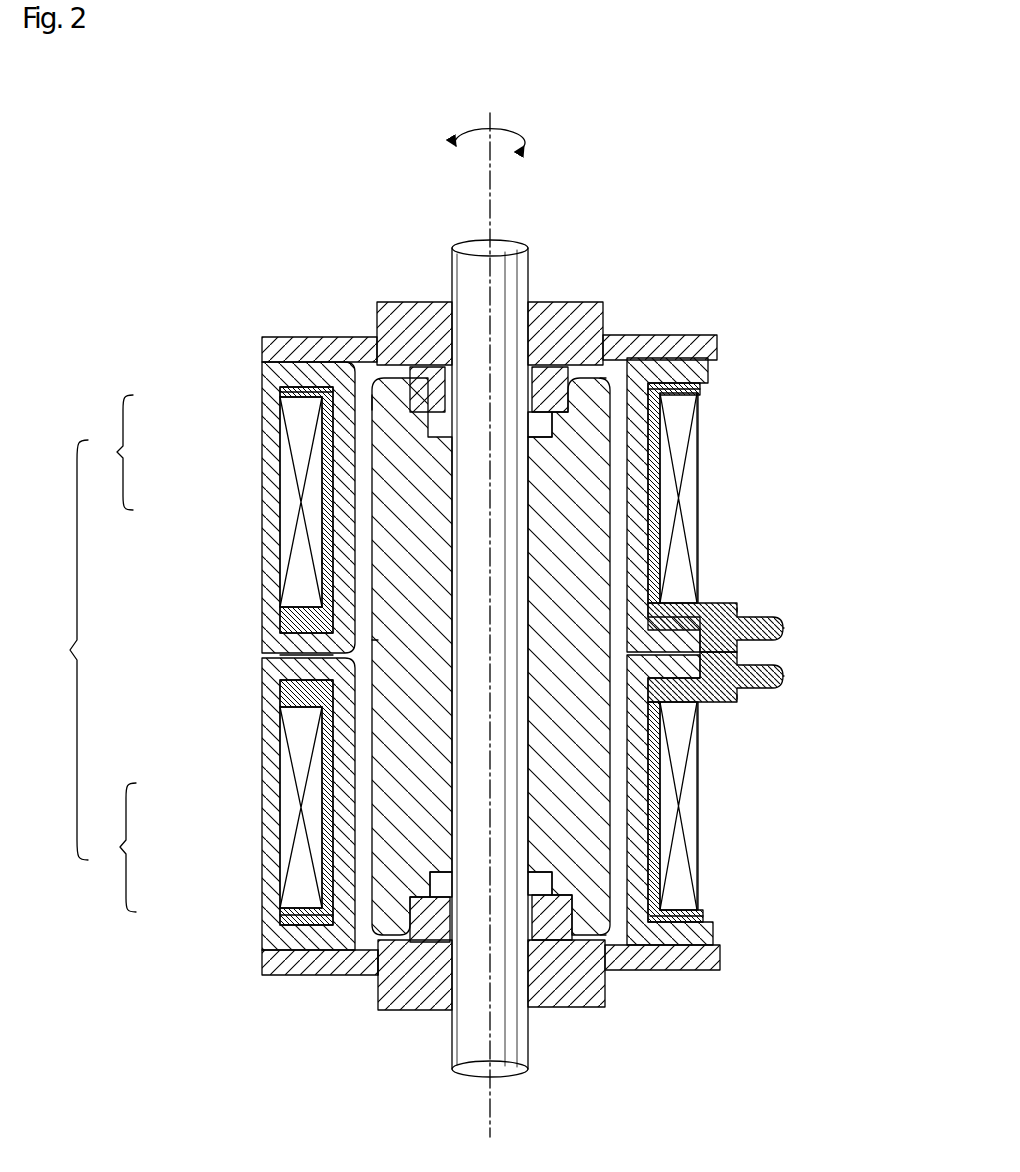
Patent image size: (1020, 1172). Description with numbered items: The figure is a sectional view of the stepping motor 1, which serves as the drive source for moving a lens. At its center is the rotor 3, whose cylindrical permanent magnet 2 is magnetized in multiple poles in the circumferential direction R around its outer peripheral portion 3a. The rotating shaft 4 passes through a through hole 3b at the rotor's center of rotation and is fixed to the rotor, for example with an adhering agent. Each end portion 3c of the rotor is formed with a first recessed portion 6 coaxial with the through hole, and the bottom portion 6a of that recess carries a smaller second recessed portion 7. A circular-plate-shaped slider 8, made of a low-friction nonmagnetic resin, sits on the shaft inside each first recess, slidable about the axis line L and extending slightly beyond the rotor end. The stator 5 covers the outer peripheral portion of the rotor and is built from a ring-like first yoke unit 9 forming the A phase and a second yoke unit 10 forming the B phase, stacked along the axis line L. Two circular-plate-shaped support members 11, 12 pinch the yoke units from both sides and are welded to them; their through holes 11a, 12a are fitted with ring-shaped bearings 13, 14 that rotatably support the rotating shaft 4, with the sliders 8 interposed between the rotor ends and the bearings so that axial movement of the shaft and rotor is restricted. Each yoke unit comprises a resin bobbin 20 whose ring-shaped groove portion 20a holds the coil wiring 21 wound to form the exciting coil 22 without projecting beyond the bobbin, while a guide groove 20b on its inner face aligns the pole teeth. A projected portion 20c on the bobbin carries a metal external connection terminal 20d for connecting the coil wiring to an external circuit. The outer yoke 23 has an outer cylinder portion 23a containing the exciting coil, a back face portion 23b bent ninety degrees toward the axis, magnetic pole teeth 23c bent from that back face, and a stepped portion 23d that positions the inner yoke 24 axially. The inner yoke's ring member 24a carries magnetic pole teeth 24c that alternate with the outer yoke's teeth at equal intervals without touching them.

The stepping motor 1 is at (742, 212).
The permanent magnet 2 is at (262, 640).
The rotor 3 is at (606, 366).
The outer peripheral portion 3a is at (372, 385).
The through hole 3b is at (370, 638).
The end portion 3c is at (600, 374).
The rotating shaft 4 is at (528, 248).
The stator 5 is at (69, 650).
The first recessed portion 6 is at (394, 304).
The bottom portion 6a is at (430, 992).
The second recessed portion 7 is at (440, 392).
The slider 8 is at (546, 400).
The first yoke unit 9 is at (113, 452).
The second yoke unit 10 is at (112, 847).
The support member 11 is at (712, 337).
The through hole 11a is at (436, 383).
The support member 12 is at (712, 972).
The through hole 12a is at (560, 1004).
The bearing 13 is at (576, 365).
The bearing 14 is at (386, 990).
The bobbin 20 is at (722, 600).
The groove portion 20a is at (660, 460).
The guide groove 20b is at (660, 432).
The projected portion 20c is at (738, 612).
The external connection terminal 20d is at (790, 678).
The coil wiring 21 is at (688, 490).
The exciting coil 22 is at (290, 500).
The outer yoke 23 is at (262, 440).
The outer cylinder portion 23a is at (322, 562).
The back face portion 23b is at (280, 656).
The magnetic pole teeth 23c is at (325, 540).
The stepped portion 23d is at (276, 372).
The inner yoke 24 is at (262, 412).
The ring member 24a is at (684, 370).
The magnetic pole teeth 24c is at (648, 515).
The axis line L is at (490, 130).
The circumferential direction R is at (525, 152).